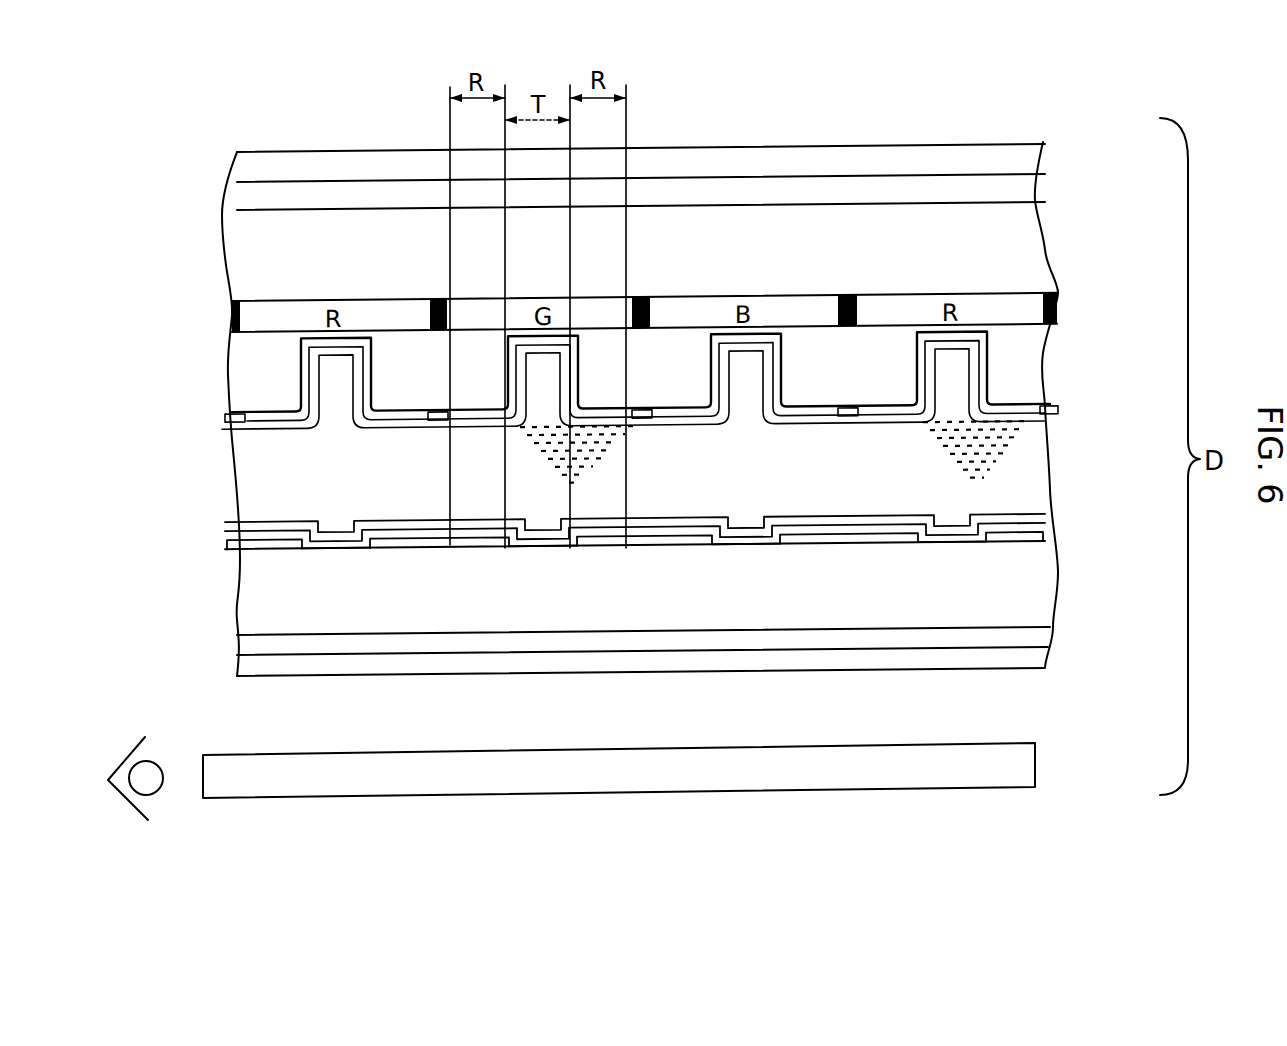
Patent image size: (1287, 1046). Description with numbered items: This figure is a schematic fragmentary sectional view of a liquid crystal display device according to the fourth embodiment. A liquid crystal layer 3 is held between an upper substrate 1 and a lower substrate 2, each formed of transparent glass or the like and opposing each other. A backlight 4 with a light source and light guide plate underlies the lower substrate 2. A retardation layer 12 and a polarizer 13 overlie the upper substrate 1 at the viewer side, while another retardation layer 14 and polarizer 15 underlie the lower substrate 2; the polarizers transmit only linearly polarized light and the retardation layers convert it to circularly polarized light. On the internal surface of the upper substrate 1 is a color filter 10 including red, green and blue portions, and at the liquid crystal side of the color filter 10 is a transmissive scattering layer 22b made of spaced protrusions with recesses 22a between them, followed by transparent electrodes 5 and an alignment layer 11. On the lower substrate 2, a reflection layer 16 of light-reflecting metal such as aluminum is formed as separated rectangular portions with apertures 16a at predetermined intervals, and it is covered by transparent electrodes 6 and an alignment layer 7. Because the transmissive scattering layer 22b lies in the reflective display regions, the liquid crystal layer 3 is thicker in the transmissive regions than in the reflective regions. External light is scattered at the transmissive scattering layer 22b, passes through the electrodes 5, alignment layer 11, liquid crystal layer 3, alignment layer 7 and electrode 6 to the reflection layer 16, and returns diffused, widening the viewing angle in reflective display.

The upper substrate 1 is at (1030, 243).
The lower substrate 2 is at (1047, 578).
The liquid crystal layer 3 is at (1007, 443).
The backlight 4 is at (1020, 765).
The transparent electrode 5 is at (224, 414).
The transparent electrode 6 is at (1047, 525).
The alignment layer 7 is at (1053, 512).
The color filter 10 is at (1066, 297).
The alignment layer 11 is at (230, 428).
The retardation layer 12 is at (1022, 185).
The polarizer 13 is at (1022, 155).
The retardation layer 14 is at (1047, 635).
The polarizer 15 is at (1038, 655).
The reflection layer 16 is at (1047, 533).
The aperture 16a is at (735, 547).
The recess 22a is at (330, 350).
The transmissive scattering layer 22b is at (250, 377).